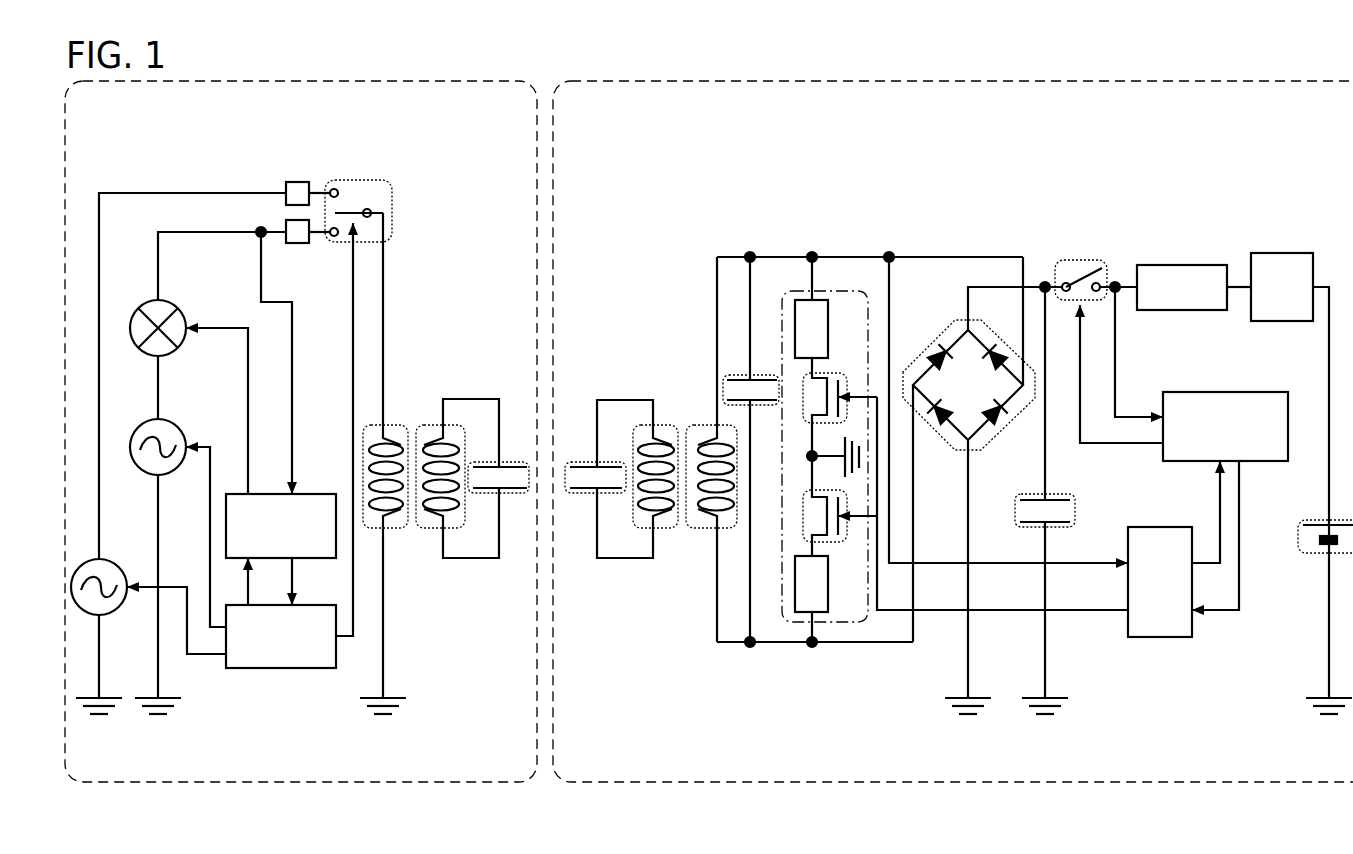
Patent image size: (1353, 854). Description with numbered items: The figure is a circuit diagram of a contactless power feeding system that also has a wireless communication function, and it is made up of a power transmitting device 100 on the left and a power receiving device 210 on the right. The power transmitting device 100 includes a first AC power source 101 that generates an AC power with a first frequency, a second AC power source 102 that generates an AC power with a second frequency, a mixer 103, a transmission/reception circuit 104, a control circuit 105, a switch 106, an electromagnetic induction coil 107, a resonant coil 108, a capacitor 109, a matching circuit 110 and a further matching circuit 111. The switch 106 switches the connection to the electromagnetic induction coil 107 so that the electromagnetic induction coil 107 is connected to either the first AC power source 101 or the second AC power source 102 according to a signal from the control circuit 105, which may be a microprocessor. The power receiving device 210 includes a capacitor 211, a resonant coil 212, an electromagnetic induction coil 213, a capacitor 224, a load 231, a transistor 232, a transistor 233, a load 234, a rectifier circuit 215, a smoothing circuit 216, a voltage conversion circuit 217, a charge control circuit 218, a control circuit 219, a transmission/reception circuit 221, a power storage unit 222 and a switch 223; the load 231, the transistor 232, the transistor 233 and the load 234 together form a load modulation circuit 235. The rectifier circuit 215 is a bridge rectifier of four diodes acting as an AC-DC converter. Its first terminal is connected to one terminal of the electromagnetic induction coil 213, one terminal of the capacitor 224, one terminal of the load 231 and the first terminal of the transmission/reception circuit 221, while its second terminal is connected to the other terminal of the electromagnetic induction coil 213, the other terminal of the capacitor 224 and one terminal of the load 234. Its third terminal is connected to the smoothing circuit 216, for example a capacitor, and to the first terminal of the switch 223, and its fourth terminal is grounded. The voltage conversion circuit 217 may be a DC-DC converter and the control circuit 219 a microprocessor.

The power transmitting device 100 is at (481, 761).
The first AC power source 101 is at (177, 426).
The second AC power source 102 is at (112, 614).
The mixer 103 is at (177, 307).
The transmission/reception circuit 104 is at (281, 526).
The control circuit 105 is at (281, 636).
The switch 106 is at (392, 213).
The electromagnetic induction coil 107 is at (403, 423).
The resonant coil 108 is at (433, 532).
The capacitor 109 is at (511, 496).
The matching circuit 110 is at (299, 240).
The matching circuit 111 is at (298, 186).
The power receiving device 210 is at (642, 761).
The capacitor 211 is at (572, 460).
The resonant coil 212 is at (660, 425).
The electromagnetic induction coil 213 is at (690, 425).
The rectifier circuit 215 is at (942, 434).
The smoothing circuit 216 is at (1042, 494).
The voltage conversion circuit 217 is at (1182, 287).
The charge control circuit 218 is at (1282, 287).
The control circuit 219 is at (1225, 426).
The transmission/reception circuit 221 is at (1160, 582).
The power storage unit 222 is at (1307, 554).
The switch 223 is at (1078, 260).
The capacitor 224 is at (727, 375).
The load 231 is at (800, 290).
The transistor 232 is at (835, 372).
The transistor 233 is at (835, 545).
The load 234 is at (799, 613).
The load modulation circuit 235 is at (852, 623).